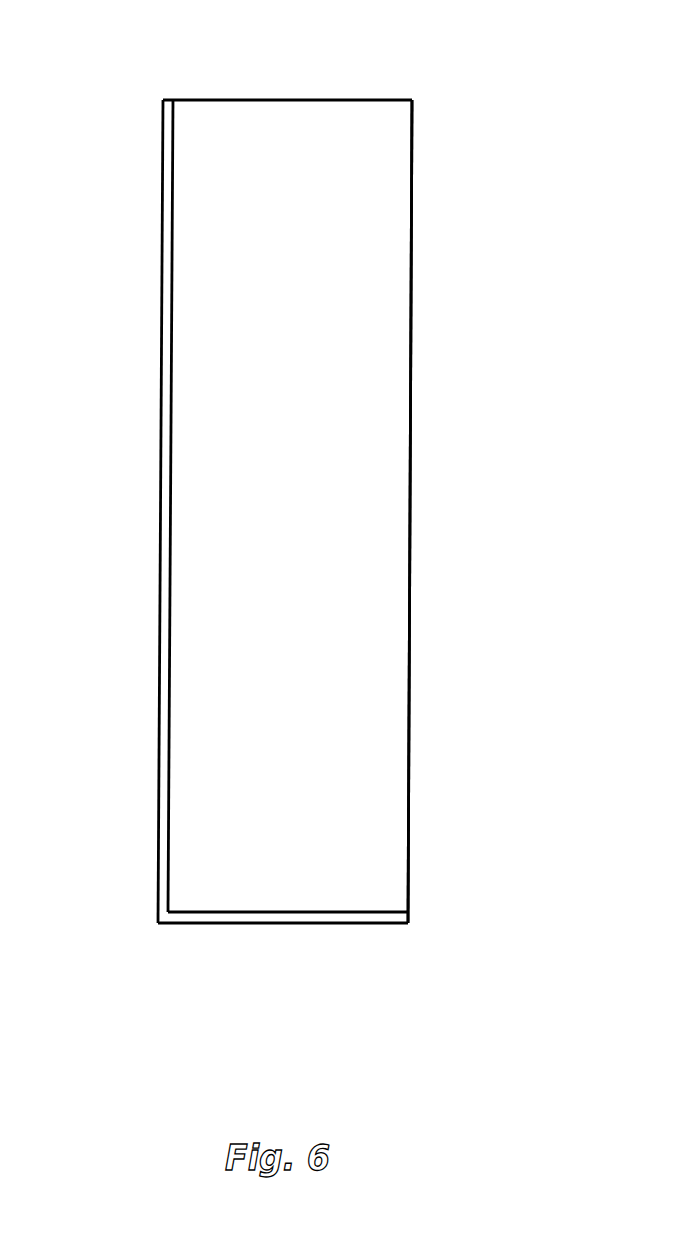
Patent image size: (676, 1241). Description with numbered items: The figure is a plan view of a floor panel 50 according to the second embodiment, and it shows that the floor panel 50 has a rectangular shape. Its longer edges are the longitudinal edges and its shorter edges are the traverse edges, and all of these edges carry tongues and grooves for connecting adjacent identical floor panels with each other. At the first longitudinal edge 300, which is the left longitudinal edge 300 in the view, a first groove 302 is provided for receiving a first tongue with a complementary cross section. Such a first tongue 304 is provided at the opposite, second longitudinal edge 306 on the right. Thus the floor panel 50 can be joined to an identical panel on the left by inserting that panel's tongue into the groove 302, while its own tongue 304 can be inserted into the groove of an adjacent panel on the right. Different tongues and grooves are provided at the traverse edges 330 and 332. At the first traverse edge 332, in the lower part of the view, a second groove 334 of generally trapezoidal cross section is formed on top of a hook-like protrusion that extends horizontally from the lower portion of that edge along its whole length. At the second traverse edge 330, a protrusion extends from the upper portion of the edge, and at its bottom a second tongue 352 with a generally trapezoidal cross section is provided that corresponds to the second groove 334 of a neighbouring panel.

The first longitudinal edge 300 is at (285, 514).
The first groove 302 is at (154, 528).
The first tongue 304 is at (405, 646).
The second longitudinal edge 306 is at (416, 554).
The second traverse edge 330 is at (285, 94).
The first traverse edge 332 is at (289, 936).
The second groove 334 is at (368, 915).
The second tongue 352 is at (354, 108).
The floor panel 50 is at (300, 494).